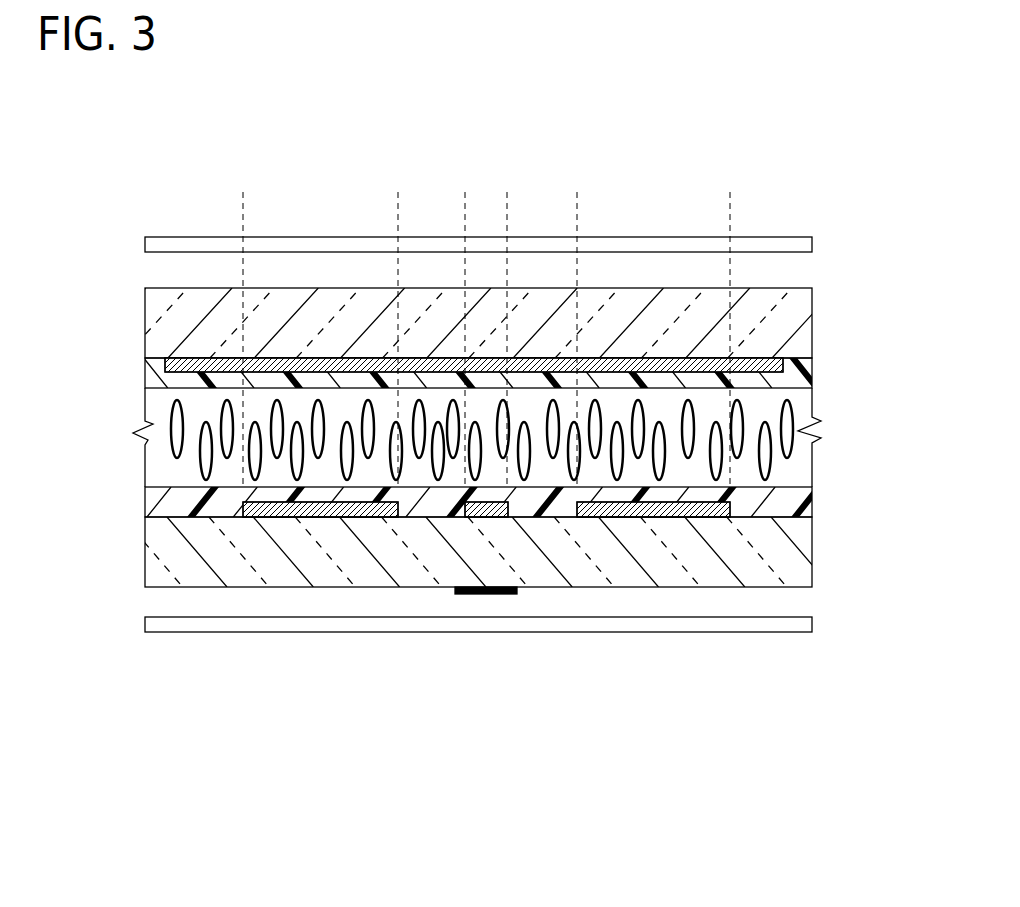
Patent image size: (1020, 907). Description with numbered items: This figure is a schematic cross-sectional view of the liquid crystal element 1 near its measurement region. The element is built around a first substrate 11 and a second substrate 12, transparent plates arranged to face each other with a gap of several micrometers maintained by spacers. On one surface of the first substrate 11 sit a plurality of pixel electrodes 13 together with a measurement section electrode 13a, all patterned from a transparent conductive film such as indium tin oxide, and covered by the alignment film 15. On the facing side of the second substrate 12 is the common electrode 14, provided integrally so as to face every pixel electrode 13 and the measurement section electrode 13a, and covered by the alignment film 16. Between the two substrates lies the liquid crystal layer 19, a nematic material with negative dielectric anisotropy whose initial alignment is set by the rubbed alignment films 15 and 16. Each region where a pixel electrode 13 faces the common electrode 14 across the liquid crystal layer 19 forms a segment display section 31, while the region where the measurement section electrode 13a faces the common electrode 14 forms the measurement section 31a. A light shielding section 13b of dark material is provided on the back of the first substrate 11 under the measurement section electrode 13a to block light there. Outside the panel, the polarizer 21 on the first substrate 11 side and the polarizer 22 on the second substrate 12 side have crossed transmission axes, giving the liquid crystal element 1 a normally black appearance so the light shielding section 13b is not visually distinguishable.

The liquid crystal element 1 is at (496, 773).
The first substrate 11 is at (812, 555).
The second substrate 12 is at (812, 325).
The pixel electrodes 13 is at (317, 511).
The measurement section electrode 13a is at (462, 513).
The light shielding section 13b is at (510, 594).
The common electrode 14 is at (188, 358).
The alignment film 15 is at (812, 507).
The alignment film 16 is at (812, 378).
The liquid crystal layer 19 is at (800, 432).
The polarizer 21 is at (812, 618).
The polarizer 22 is at (812, 243).
The segment display section 31 is at (398, 185).
The measurement section 31a is at (506, 185).